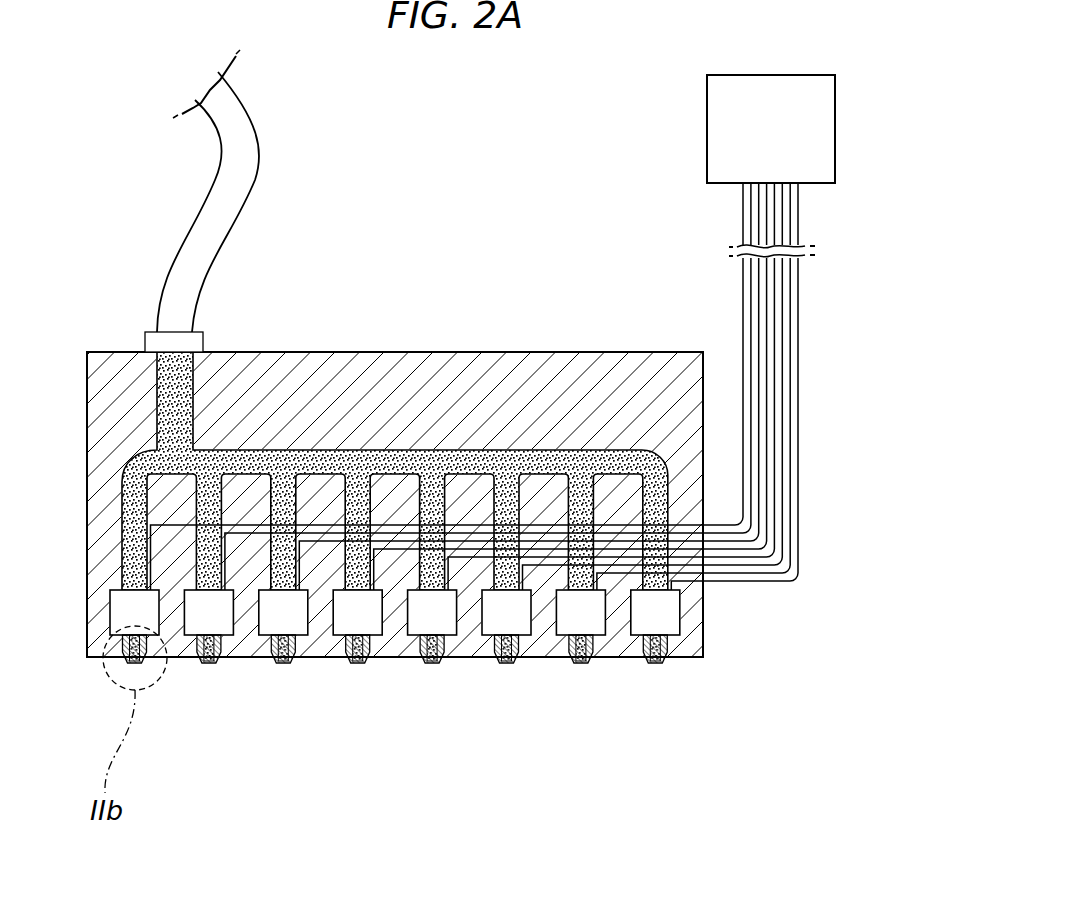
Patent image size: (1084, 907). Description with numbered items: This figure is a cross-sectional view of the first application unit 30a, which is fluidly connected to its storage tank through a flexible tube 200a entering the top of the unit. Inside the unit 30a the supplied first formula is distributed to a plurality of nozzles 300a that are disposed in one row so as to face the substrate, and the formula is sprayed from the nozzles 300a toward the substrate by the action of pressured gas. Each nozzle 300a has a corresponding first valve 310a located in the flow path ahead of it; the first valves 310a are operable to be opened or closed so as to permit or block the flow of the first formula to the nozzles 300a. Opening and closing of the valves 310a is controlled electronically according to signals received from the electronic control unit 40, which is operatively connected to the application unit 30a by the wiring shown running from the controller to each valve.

The flexible tube 200a is at (250, 133).
The first application unit 30a is at (457, 346).
The control unit 40 is at (790, 142).
The first valve 310a is at (668, 623).
The nozzle 300a is at (660, 662).